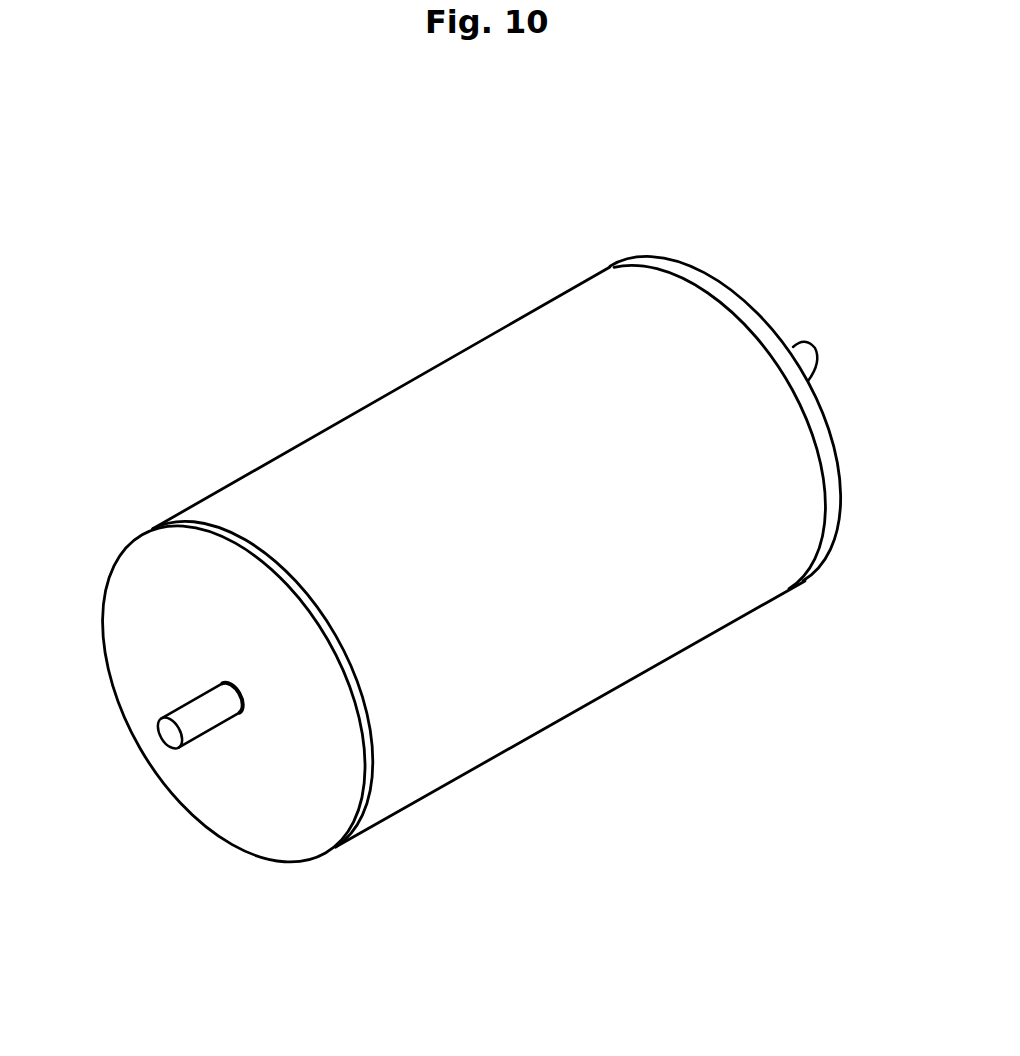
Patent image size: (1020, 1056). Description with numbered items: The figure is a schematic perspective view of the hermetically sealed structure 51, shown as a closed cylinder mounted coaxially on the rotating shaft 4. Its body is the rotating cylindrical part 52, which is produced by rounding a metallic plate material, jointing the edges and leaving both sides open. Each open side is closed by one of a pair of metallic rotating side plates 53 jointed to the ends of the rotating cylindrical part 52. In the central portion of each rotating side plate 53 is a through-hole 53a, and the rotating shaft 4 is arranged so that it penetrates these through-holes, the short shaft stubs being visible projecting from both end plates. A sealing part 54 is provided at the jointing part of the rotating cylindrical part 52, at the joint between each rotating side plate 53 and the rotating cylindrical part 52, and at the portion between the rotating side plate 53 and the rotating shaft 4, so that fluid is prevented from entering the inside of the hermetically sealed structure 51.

The hermetically sealed structure 51 is at (502, 289).
The rotating cylindrical part 52 is at (433, 392).
The rotating side plate 53 is at (265, 835).
The through-hole 53a is at (238, 705).
The sealing part 54 is at (376, 776).
The rotating shaft 4 is at (180, 715).